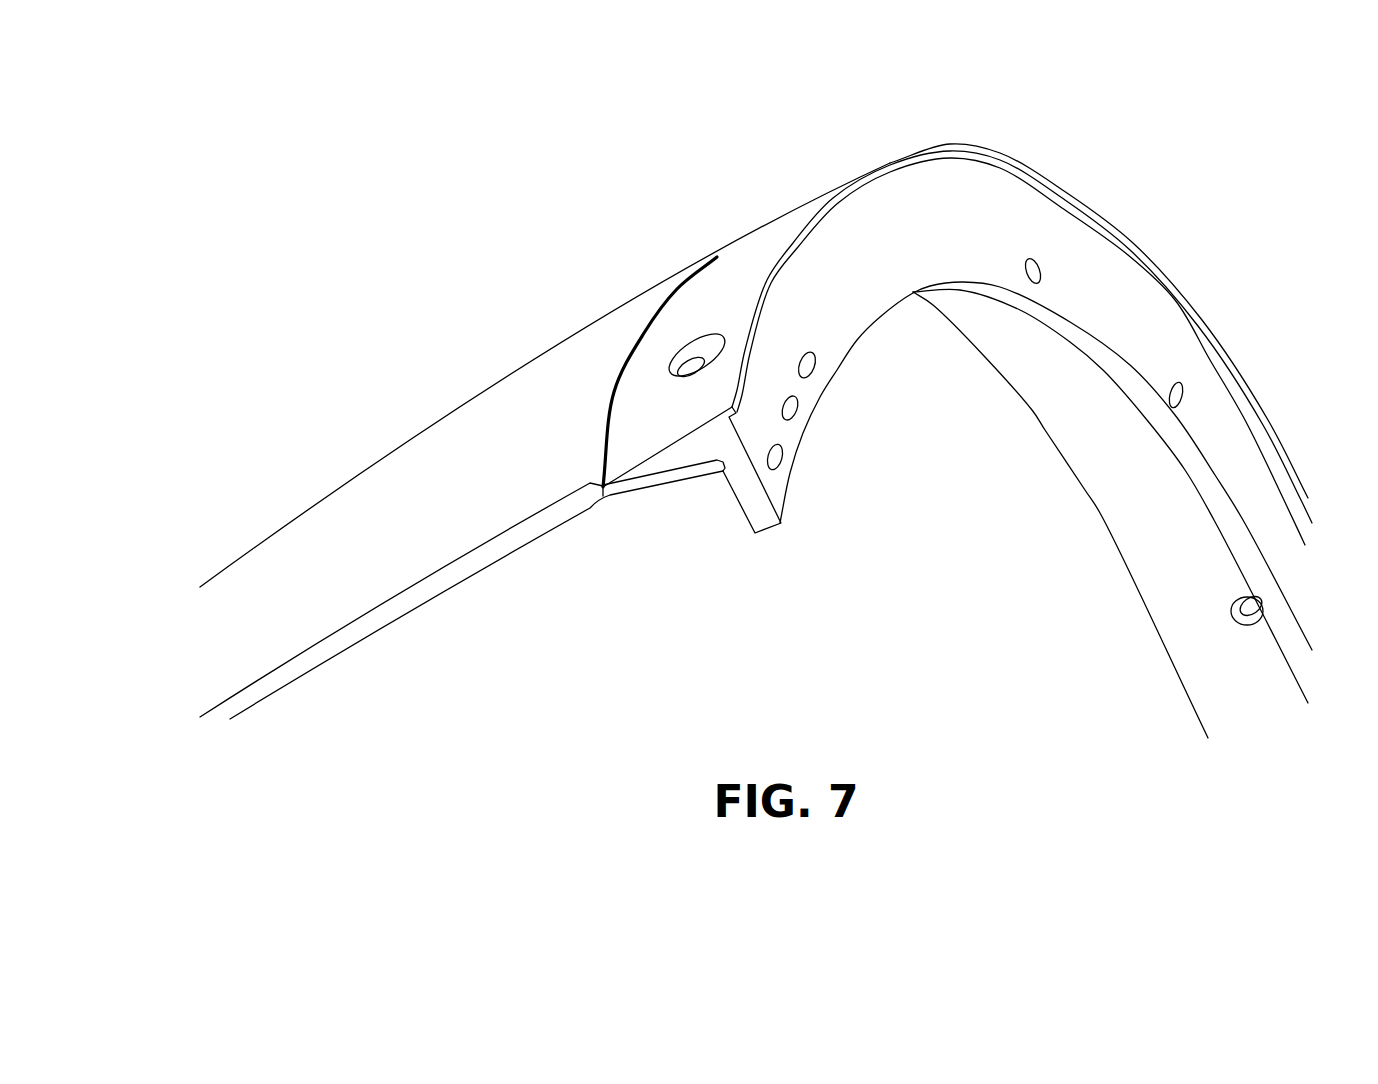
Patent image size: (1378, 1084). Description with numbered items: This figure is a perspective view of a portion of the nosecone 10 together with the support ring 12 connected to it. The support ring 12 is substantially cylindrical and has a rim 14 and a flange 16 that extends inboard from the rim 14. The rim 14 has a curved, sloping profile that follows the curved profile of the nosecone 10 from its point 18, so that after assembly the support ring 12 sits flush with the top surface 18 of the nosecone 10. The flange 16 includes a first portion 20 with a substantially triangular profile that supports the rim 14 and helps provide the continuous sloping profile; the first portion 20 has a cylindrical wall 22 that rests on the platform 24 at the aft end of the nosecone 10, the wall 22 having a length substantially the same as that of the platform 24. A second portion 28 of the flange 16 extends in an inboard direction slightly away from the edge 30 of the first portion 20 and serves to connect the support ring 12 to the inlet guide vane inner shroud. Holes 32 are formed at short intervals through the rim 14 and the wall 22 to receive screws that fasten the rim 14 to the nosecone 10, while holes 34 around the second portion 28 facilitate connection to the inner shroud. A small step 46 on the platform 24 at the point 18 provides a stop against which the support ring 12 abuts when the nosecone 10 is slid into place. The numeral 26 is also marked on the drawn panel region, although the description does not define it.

The nosecone 10 is at (302, 535).
The support ring 12 is at (941, 134).
The rim 14 is at (747, 257).
The flange 16 is at (1080, 284).
The point 18 is at (650, 335).
The first portion 20 is at (688, 442).
The cylindrical wall 22 is at (638, 488).
The platform 24 is at (697, 463).
The flat panel 26 is at (395, 525).
The second portion 28 is at (885, 227).
The edge 30 is at (1003, 156).
The holes 32 is at (705, 352).
The holes 34 is at (1179, 390).
The step 46 is at (598, 486).